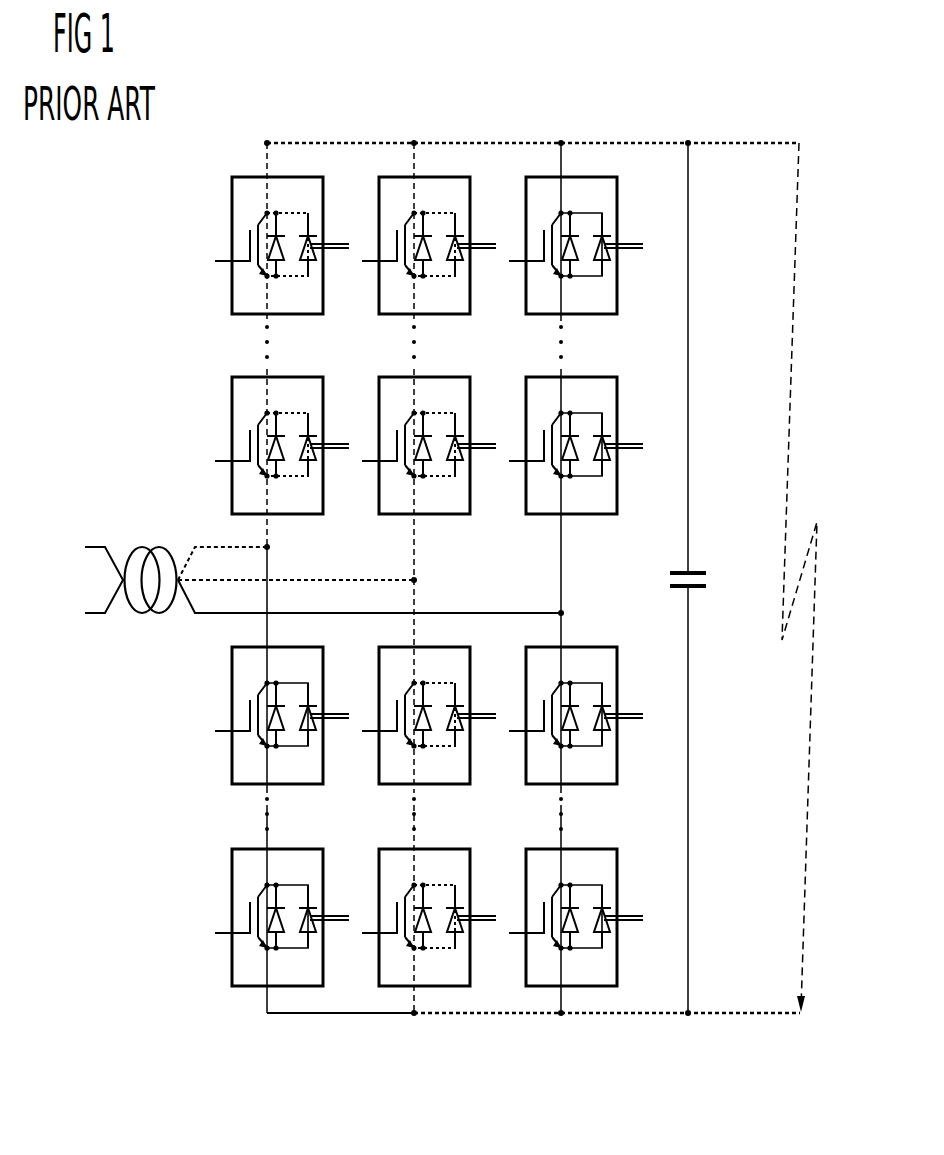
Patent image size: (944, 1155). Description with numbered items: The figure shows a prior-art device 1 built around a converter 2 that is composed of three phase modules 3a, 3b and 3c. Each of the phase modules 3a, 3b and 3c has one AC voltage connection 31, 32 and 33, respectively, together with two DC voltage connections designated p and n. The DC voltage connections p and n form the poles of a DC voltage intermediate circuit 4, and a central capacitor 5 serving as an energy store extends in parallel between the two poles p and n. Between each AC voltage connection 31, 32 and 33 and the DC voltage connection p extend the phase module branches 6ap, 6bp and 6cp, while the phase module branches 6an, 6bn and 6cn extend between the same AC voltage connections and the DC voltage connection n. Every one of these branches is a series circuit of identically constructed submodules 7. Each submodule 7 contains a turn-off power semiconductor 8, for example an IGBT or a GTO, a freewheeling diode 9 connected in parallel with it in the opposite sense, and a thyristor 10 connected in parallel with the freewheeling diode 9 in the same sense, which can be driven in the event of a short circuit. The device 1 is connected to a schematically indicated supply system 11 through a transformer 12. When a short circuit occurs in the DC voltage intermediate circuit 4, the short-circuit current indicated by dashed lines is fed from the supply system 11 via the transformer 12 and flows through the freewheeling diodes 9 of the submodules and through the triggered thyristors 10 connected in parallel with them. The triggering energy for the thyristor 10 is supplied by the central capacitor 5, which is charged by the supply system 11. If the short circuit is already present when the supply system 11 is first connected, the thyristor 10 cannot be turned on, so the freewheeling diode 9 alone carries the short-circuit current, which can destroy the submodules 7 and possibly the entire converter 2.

The device 1 is at (858, 250).
The converter 2 is at (652, 97).
The phase module 3a is at (300, 134).
The phase module 3b is at (436, 134).
The phase module 3c is at (582, 134).
The AC voltage connection 31 is at (270, 547).
The AC voltage connection 32 is at (414, 580).
The AC voltage connection 33 is at (561, 613).
The DC voltage intermediate circuit 4 is at (785, 130).
The central capacitor 5 is at (700, 560).
The phase module branch 6ap is at (242, 362).
The phase module branch 6bp is at (448, 369).
The phase module branch 6cp is at (594, 369).
The phase module branch 6an is at (222, 822).
The phase module branch 6bn is at (433, 830).
The phase module branch 6cn is at (606, 830).
The submodule 7 is at (232, 186).
The turn-off power semiconductor 8 is at (253, 269).
The freewheeling diode 9 is at (282, 279).
The thyristor 10 is at (313, 266).
The supply system 11 is at (100, 530).
The transformer 12 is at (143, 626).
The DC voltage connection p is at (267, 143).
The DC voltage connection n is at (268, 1015).